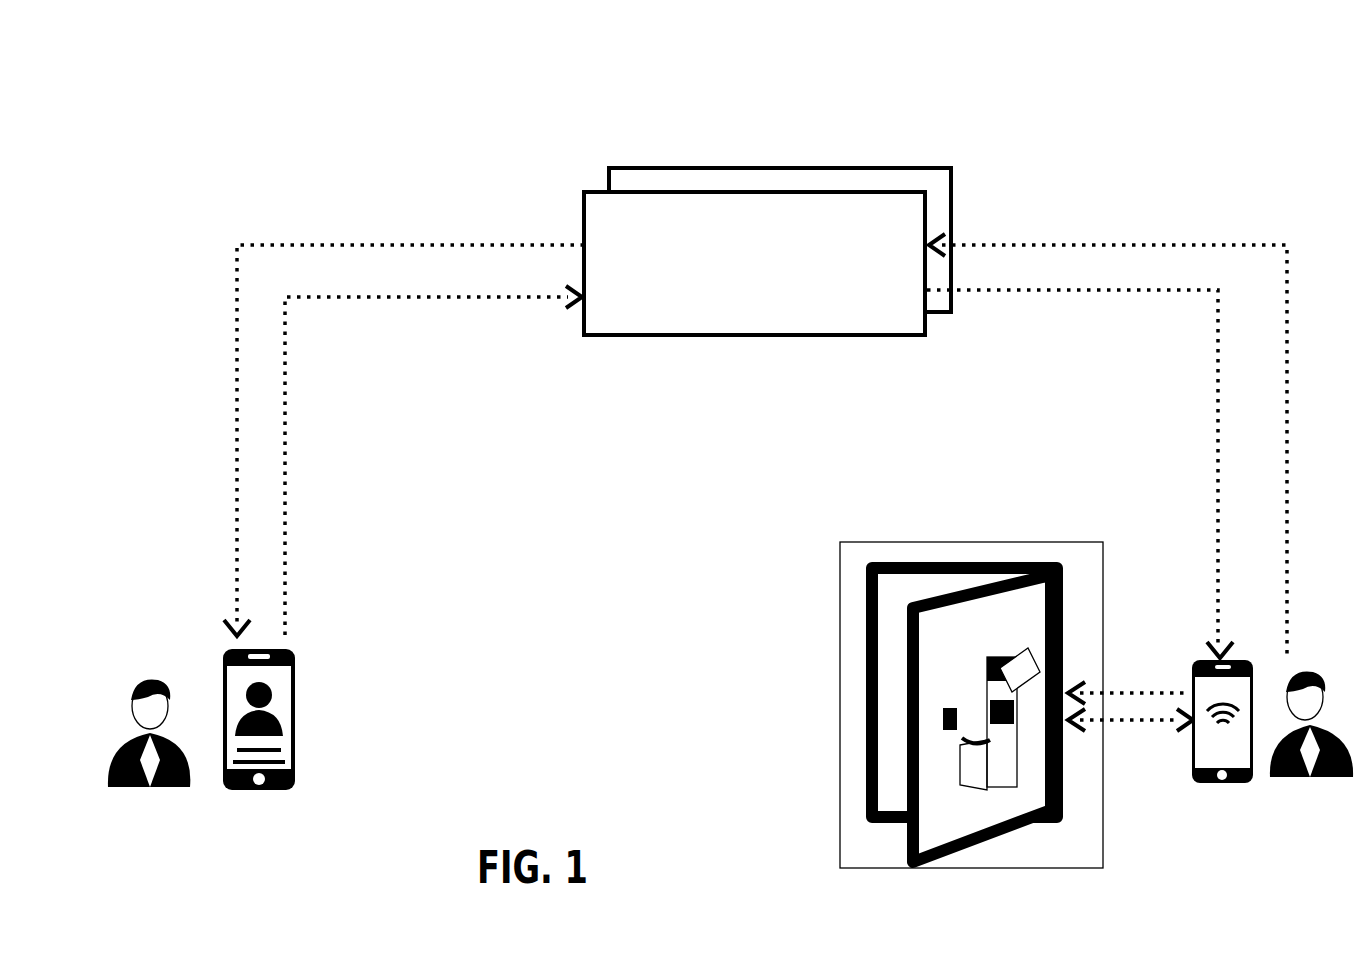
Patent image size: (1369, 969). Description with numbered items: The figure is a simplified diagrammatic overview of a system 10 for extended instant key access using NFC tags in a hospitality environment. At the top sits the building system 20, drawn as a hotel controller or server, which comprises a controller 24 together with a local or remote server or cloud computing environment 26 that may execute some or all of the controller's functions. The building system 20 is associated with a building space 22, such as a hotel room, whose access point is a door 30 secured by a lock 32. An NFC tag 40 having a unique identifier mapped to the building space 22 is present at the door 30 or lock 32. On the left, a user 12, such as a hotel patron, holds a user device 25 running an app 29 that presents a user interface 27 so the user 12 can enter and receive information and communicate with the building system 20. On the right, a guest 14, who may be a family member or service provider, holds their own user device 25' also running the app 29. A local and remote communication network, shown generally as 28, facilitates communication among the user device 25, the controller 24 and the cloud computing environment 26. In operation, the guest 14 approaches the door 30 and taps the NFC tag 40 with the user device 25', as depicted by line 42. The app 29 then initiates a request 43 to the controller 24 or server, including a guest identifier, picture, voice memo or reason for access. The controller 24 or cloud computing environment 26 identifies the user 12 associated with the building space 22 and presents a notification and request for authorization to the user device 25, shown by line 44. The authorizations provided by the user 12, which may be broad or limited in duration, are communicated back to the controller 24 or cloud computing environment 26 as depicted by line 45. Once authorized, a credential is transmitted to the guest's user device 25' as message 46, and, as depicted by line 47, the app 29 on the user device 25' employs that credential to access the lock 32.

The system 10 is at (179, 129).
The user 12 is at (149, 676).
The guest 14 is at (1301, 772).
The building system 20 is at (656, 264).
The building space 22 is at (971, 654).
The controller 24 is at (761, 317).
The user device 25 is at (317, 708).
The user device 25' is at (1215, 783).
The cloud computing environment 26 is at (811, 289).
The user interface 27 is at (318, 745).
The communication network 28 is at (384, 388).
The app 29 is at (314, 696).
The door 30 is at (964, 658).
The lock 32 is at (963, 763).
The NFC tag 40 is at (988, 710).
The line 42 is at (1130, 771).
The request 43 is at (1147, 436).
The line 44 is at (375, 426).
The line 45 is at (433, 450).
The message 46 is at (1080, 459).
The line 47 is at (1126, 648).